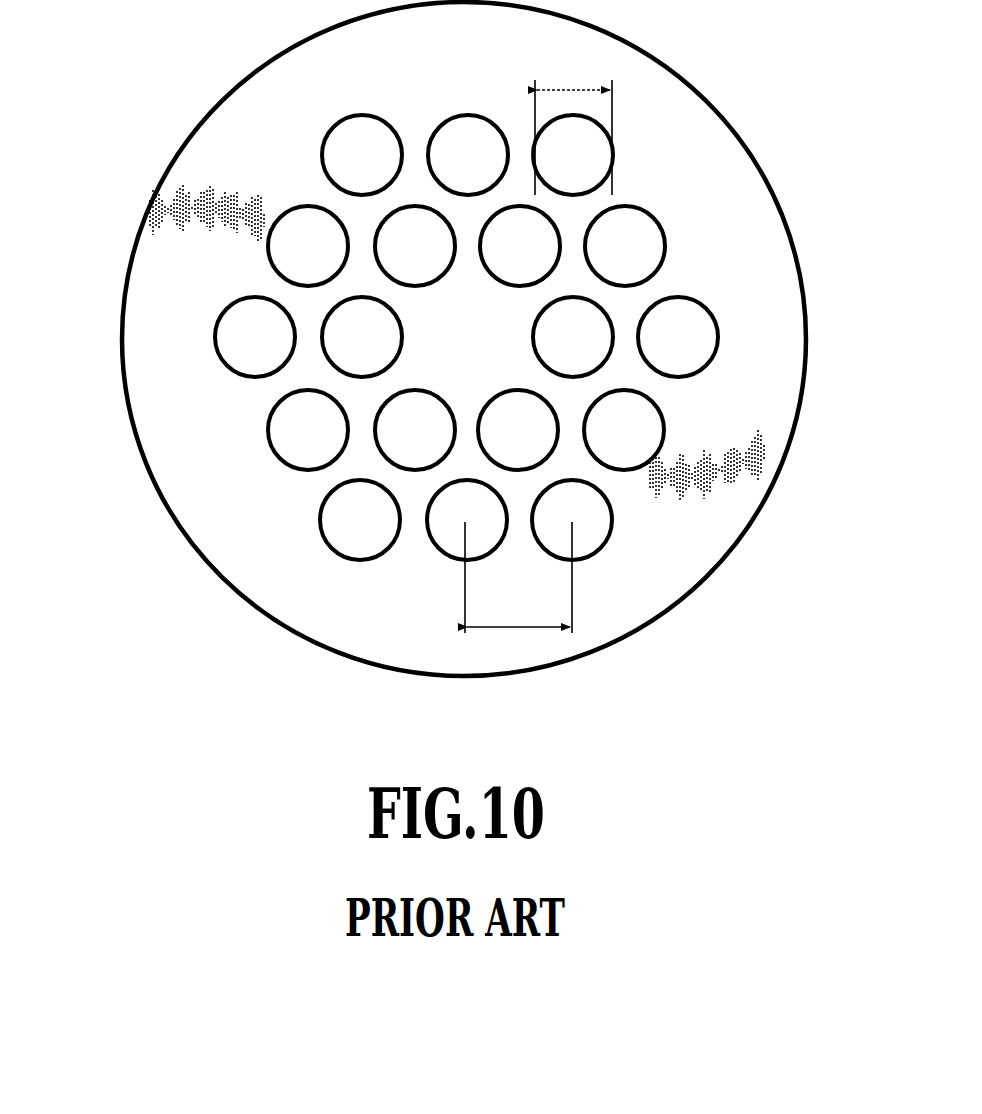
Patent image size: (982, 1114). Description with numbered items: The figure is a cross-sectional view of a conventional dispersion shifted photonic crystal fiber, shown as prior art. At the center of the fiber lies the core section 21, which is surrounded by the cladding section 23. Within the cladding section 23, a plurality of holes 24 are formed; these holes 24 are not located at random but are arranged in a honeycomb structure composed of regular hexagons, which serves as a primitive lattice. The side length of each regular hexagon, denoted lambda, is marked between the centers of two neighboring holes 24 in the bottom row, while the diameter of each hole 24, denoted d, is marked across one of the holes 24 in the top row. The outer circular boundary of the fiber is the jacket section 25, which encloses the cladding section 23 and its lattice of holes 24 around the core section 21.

The core section 21 is at (483, 328).
The cladding section 23 is at (568, 457).
The hole 24 is at (585, 518).
The jacket section 25 is at (182, 442).